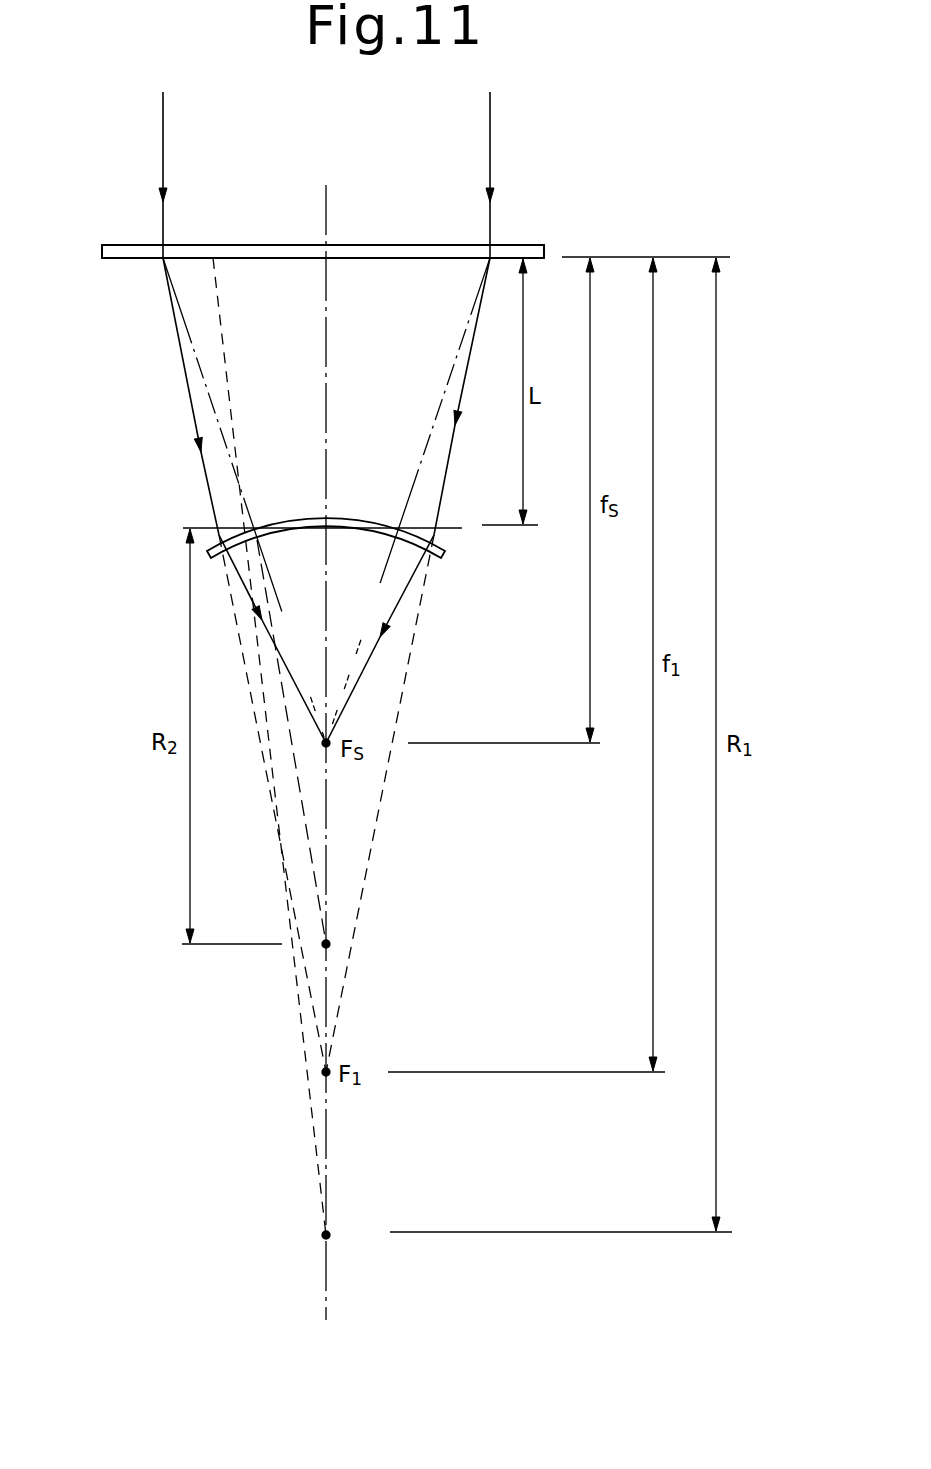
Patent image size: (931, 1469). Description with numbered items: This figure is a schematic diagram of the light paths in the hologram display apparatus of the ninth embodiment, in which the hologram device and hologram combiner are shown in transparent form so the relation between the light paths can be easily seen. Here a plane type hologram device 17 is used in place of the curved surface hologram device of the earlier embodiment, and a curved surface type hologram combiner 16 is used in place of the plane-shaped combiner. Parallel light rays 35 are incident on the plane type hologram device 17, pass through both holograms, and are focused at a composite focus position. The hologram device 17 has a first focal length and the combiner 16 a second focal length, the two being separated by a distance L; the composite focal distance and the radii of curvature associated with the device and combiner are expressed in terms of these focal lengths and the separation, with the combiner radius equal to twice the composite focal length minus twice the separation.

The plane type hologram device 17 is at (392, 245).
The parallel light rays 35 is at (490, 158).
The curved surface type hologram combiner 16 is at (362, 523).